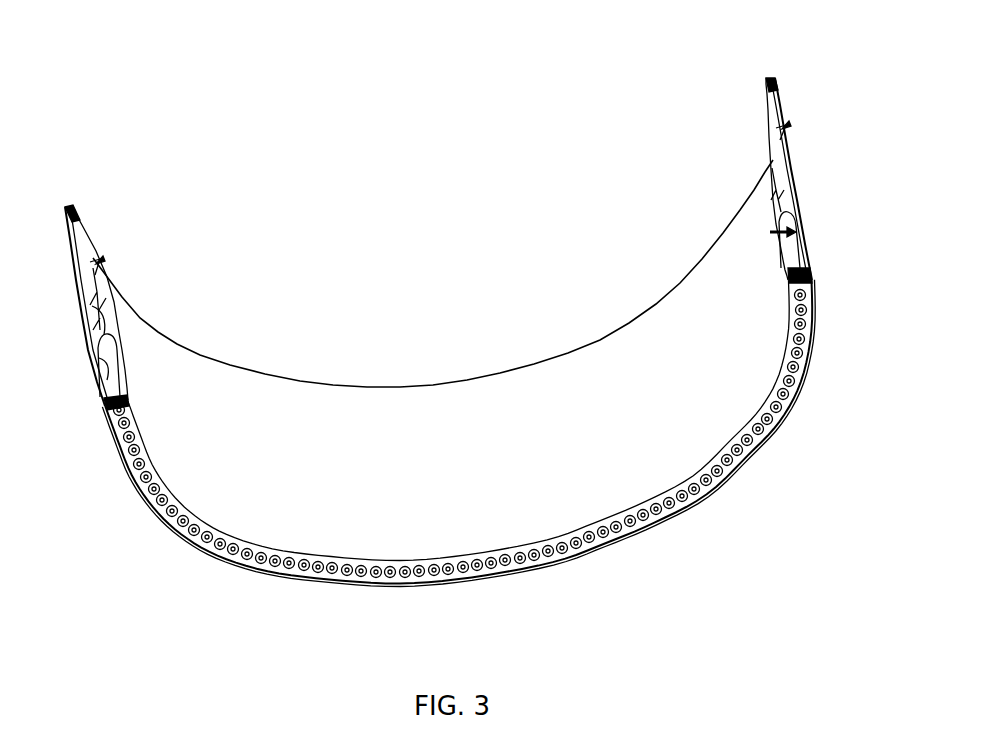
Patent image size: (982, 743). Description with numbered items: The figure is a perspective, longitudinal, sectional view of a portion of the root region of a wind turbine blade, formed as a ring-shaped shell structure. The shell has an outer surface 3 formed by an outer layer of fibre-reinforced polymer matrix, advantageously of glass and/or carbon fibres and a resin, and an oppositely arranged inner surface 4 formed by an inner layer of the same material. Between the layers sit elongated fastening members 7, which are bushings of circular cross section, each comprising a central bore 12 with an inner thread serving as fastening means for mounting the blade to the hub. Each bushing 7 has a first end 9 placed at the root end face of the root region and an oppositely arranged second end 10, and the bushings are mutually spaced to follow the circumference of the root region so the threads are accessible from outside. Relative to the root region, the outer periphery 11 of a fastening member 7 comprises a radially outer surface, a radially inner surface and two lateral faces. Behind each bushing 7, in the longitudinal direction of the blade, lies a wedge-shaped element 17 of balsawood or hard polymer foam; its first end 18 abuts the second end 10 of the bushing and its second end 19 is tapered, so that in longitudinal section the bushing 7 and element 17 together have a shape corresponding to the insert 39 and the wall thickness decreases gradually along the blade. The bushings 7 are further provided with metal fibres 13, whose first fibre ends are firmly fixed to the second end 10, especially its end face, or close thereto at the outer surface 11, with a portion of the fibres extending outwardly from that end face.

The outer surface 3 is at (437, 584).
The inner surface 4 is at (248, 407).
The elongated fastening member 7 is at (158, 499).
The first end 9 is at (114, 424).
The second end 10 is at (90, 308).
The outer periphery 11 is at (97, 347).
The central bore 12 is at (206, 534).
The metal fibres 13 is at (88, 293).
The wedge-shaped element 17 is at (100, 258).
The first end 18 is at (100, 308).
The second end 19 is at (75, 218).
The insert 39 is at (360, 582).